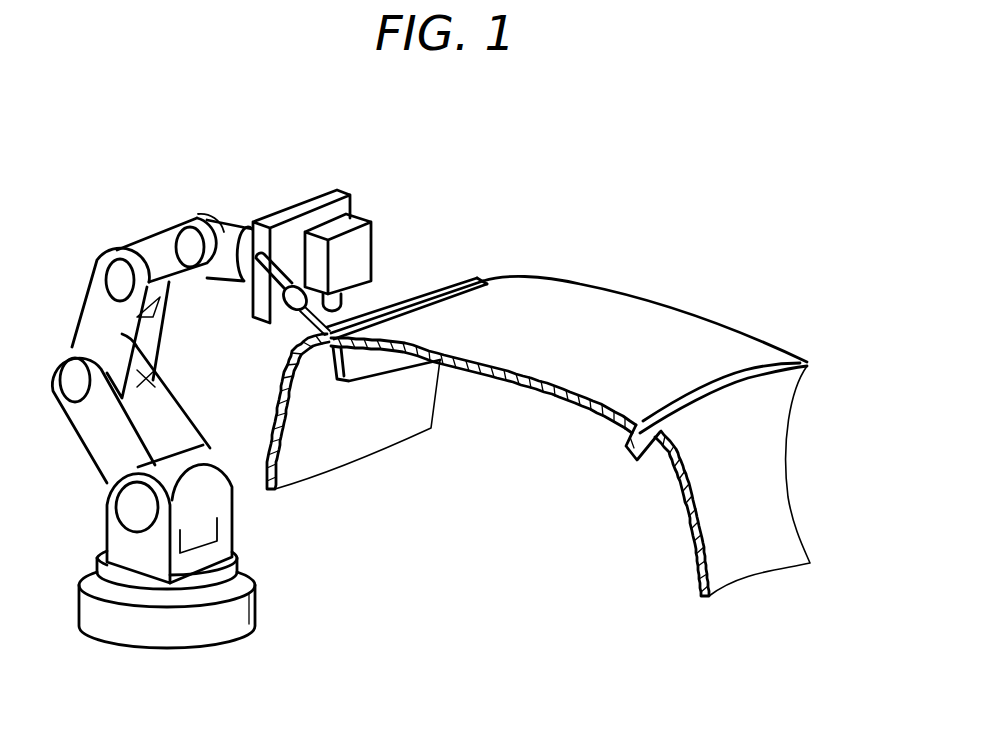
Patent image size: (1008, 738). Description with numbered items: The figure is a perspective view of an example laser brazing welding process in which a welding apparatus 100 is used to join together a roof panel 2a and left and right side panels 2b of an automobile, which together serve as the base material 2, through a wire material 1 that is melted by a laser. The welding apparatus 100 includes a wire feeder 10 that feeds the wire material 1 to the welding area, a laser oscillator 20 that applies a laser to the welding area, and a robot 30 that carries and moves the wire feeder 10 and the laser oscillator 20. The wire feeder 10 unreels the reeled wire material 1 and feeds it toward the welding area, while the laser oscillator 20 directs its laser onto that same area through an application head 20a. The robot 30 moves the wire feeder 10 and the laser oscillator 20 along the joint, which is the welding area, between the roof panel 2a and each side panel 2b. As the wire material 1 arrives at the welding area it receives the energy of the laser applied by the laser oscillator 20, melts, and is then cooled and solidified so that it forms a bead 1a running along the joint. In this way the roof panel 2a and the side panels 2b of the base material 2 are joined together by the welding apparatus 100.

The welding apparatus 100 is at (370, 150).
The robot 30 is at (176, 217).
The laser oscillator 20 is at (376, 235).
The application head 20a is at (344, 299).
The wire feeder 10 is at (278, 305).
The wire material 1 is at (330, 334).
The bead 1a is at (474, 279).
The base material 2 is at (770, 282).
The roof panel 2a is at (650, 330).
The side panel 2b is at (417, 402).